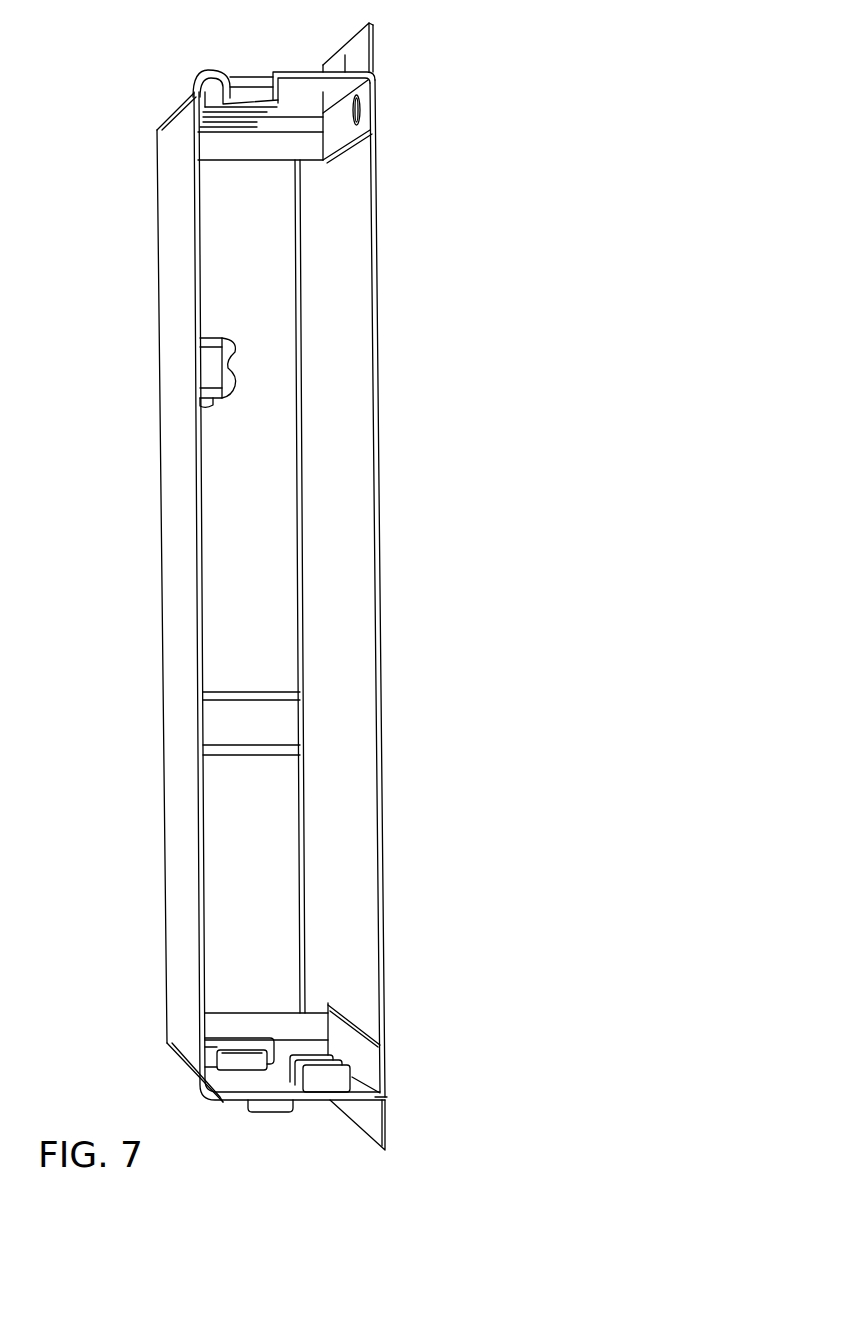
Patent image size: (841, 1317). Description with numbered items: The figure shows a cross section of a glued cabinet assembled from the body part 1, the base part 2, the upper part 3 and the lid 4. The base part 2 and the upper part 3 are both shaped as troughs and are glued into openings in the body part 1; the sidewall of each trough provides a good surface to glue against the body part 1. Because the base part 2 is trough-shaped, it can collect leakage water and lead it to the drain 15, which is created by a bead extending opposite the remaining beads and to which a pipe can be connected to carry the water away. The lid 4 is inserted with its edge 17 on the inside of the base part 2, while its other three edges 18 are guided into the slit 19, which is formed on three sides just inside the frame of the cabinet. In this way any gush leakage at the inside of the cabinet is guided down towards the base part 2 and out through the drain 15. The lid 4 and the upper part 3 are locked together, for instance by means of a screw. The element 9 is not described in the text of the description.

The body part 1 is at (177, 940).
The base part 2 is at (388, 1127).
The upper part 3 is at (203, 104).
The lid 4 is at (378, 371).
The connector block 9 is at (330, 1080).
The drain 15 is at (277, 1107).
The edge 17 is at (378, 1068).
The edges 18 is at (375, 107).
The slit 19 is at (375, 72).